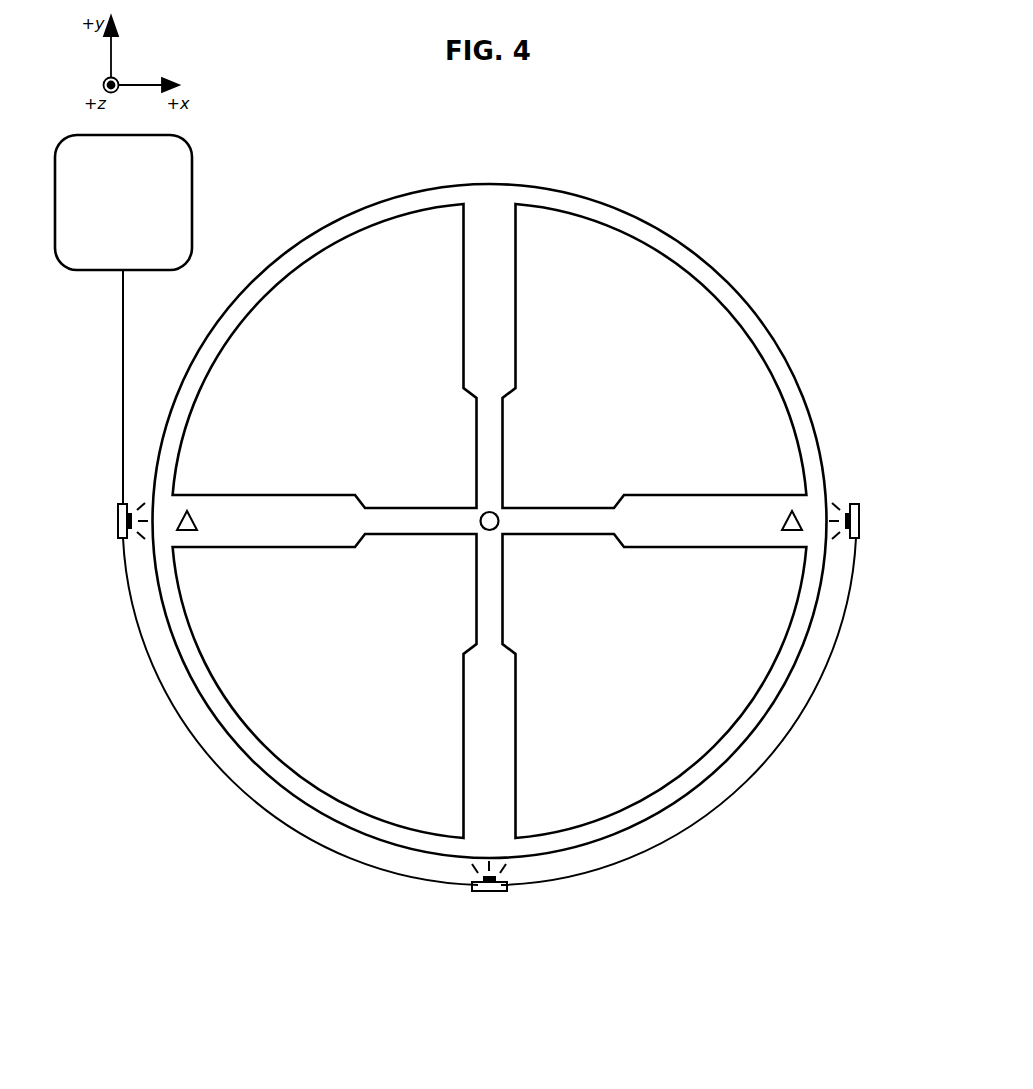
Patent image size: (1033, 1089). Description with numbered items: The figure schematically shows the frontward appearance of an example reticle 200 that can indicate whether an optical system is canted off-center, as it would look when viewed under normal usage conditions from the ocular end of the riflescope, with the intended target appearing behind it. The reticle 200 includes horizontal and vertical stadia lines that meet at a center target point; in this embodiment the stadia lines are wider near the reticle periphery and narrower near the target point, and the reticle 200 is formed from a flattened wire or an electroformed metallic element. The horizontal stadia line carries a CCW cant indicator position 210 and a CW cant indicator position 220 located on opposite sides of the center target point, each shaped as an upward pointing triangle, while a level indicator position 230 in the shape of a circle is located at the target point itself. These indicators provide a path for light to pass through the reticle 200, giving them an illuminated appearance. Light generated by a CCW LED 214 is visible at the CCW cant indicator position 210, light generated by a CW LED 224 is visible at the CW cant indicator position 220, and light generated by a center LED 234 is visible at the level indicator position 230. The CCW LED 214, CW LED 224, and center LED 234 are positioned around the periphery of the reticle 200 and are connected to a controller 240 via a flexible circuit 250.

The reticle 200 is at (720, 292).
The CCW cant indicator position 210 is at (195, 527).
The CW cant indicator position 220 is at (784, 523).
The level indicator position 230 is at (487, 527).
The CCW LED 214 is at (118, 523).
The CW LED 224 is at (859, 523).
The center LED 234 is at (490, 893).
The controller 240 is at (123, 319).
The flexible circuit 250 is at (251, 809).